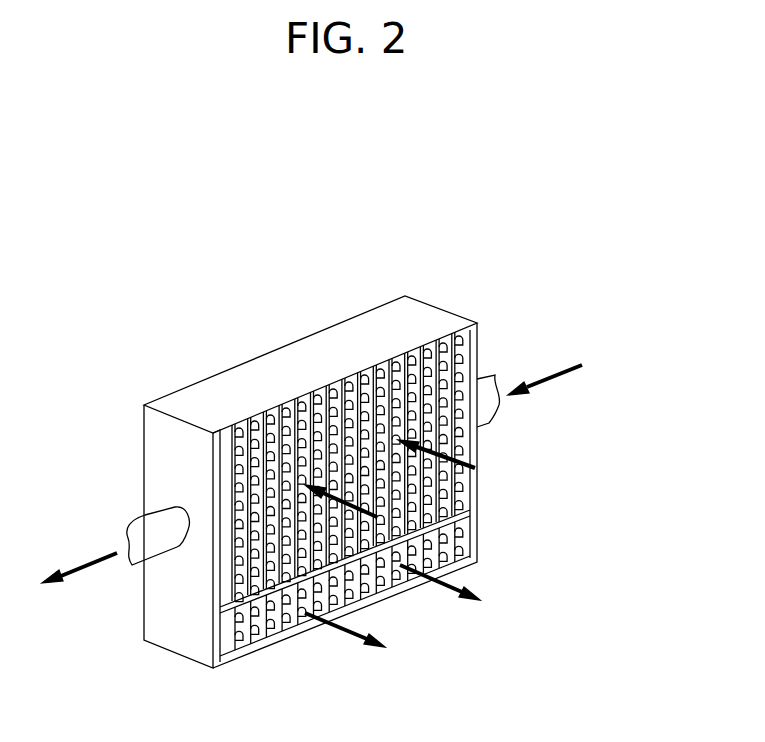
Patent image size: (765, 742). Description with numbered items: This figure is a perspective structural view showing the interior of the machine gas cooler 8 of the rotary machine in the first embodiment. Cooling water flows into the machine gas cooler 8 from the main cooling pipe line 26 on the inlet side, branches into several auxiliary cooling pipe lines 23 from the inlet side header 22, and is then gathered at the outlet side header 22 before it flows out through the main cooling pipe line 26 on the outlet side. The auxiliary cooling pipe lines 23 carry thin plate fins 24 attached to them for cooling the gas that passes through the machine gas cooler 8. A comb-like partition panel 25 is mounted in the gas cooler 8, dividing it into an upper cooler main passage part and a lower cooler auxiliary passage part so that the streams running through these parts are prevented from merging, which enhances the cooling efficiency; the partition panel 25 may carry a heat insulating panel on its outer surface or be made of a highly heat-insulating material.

The machine gas cooler 8 is at (216, 400).
The header 22 is at (223, 453).
The auxiliary cooling pipe line 23 is at (440, 380).
The thin plate fin 24 is at (320, 387).
The partition panel 25 is at (445, 517).
The main cooling pipe line 26 is at (148, 535).